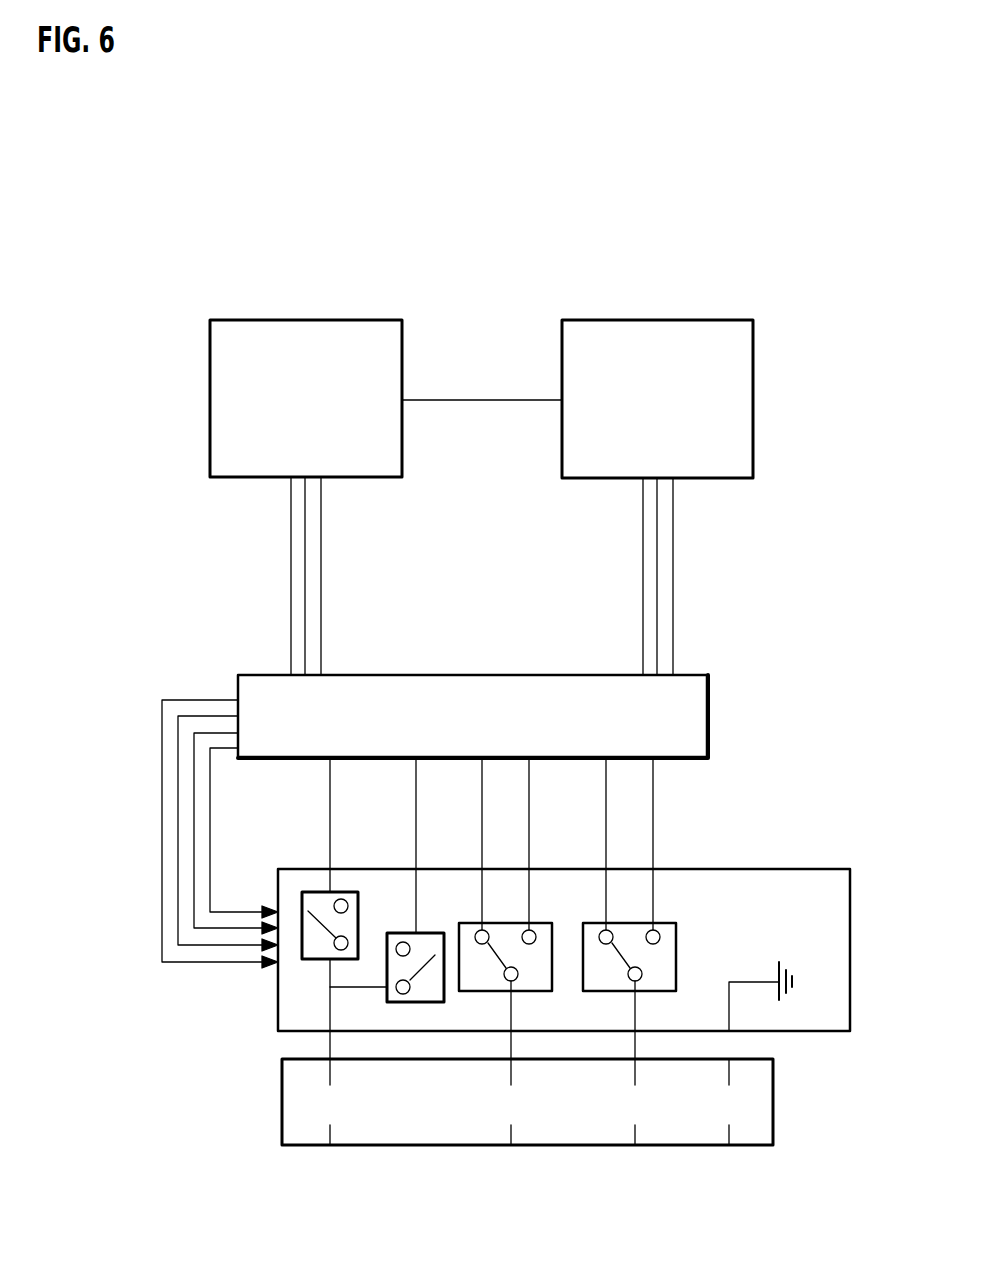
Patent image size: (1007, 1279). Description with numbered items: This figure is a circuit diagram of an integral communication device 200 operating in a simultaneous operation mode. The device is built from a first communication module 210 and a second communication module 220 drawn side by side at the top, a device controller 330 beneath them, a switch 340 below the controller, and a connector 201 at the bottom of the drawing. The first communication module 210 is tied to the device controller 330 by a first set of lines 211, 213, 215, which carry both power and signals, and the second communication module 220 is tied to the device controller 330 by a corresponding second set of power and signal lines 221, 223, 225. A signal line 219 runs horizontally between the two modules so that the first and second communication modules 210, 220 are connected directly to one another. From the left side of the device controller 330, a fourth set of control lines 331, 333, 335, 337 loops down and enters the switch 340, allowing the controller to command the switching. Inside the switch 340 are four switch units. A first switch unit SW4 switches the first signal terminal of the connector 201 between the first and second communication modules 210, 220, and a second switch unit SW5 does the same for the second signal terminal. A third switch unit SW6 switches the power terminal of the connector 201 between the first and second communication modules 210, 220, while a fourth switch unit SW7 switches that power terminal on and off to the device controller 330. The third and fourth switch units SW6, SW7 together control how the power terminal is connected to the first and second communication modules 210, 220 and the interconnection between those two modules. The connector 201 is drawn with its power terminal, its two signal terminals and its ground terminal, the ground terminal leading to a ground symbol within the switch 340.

The integral communication device 200 is at (502, 250).
The connector 201 is at (713, 1146).
The first communication module 210 is at (278, 320).
The first set of lines (power and signal lines) 211 is at (291, 568).
The first set of lines (power and signal lines) 213 is at (305, 540).
The first set of lines (power and signal lines) 215 is at (321, 617).
The signal line 219 is at (483, 400).
The second communication module 220 is at (628, 320).
The second set of lines (power and signal lines) 221 is at (673, 617).
The second set of lines (power and signal lines) 223 is at (657, 540).
The second set of lines (power and signal lines) 225 is at (643, 568).
The device controller 330 is at (707, 712).
The control line 331 is at (212, 826).
The control line 333 is at (193, 777).
The control line 335 is at (178, 825).
The control line 337 is at (162, 873).
The switch 340 is at (523, 940).
The first switch unit SW4 is at (677, 960).
The second switch unit SW5 is at (552, 960).
The third switch unit SW6 is at (428, 932).
The fourth switch unit SW7 is at (313, 962).